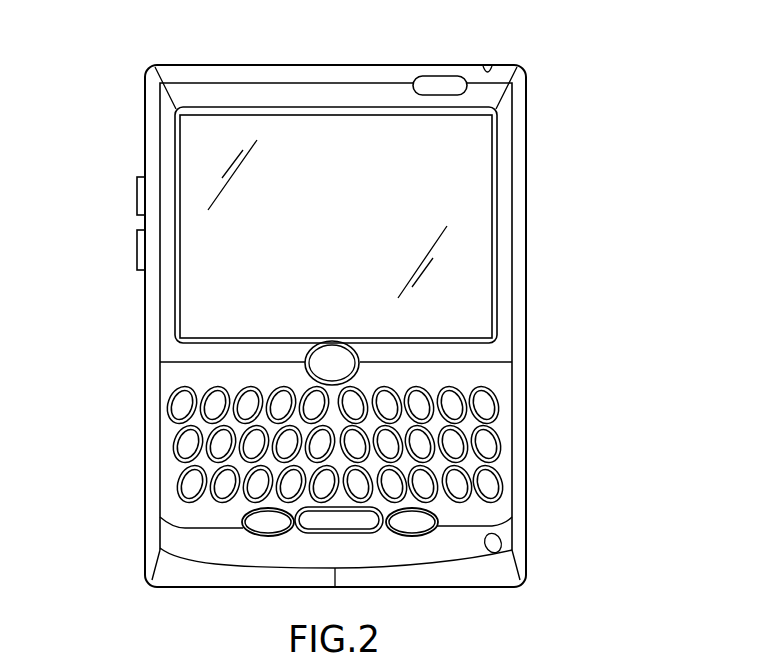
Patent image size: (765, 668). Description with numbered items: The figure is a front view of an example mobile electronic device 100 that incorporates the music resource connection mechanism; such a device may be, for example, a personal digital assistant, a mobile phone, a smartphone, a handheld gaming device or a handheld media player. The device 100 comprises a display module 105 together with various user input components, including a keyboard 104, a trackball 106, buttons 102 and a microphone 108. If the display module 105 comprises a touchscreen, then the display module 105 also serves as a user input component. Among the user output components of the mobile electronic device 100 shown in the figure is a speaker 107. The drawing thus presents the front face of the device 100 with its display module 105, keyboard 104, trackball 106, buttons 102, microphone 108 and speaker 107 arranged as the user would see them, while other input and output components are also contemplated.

The mobile electronic device 100 is at (542, 119).
The buttons 102 is at (137, 248).
The keyboard 104 is at (186, 382).
The display module 105 is at (352, 235).
The trackball 106 is at (335, 353).
The speaker 107 is at (440, 96).
The microphone 108 is at (500, 535).